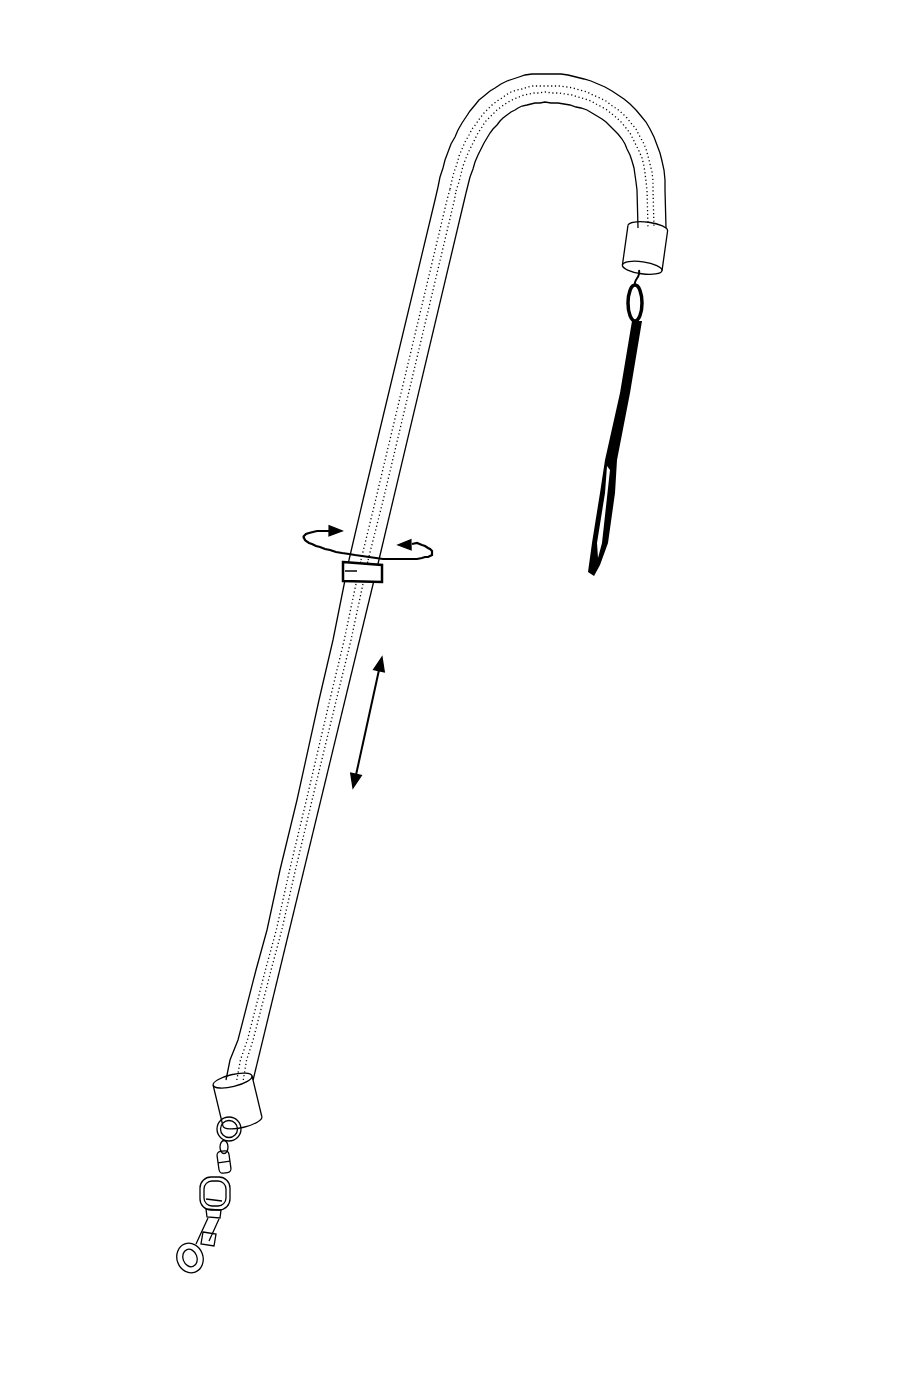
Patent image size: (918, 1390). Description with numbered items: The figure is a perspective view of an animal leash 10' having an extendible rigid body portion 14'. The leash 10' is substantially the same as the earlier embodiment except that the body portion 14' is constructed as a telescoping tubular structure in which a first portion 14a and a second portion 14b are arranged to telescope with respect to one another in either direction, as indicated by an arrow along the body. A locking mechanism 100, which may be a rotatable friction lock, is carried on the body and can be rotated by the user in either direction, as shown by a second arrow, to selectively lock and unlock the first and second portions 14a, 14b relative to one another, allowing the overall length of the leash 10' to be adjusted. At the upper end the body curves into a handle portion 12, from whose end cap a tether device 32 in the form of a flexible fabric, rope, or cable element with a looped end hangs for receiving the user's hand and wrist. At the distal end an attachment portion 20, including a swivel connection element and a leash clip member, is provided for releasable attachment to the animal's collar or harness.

The animal leash 10' is at (407, 642).
The handle portion 12 is at (627, 81).
The extendible rigid body portion 14' is at (395, 566).
The first portion 14a is at (420, 272).
The second portion 14b is at (290, 853).
The locking mechanism 100 is at (350, 571).
The tether device 32 is at (679, 452).
The attachment portion 20 is at (286, 1213).